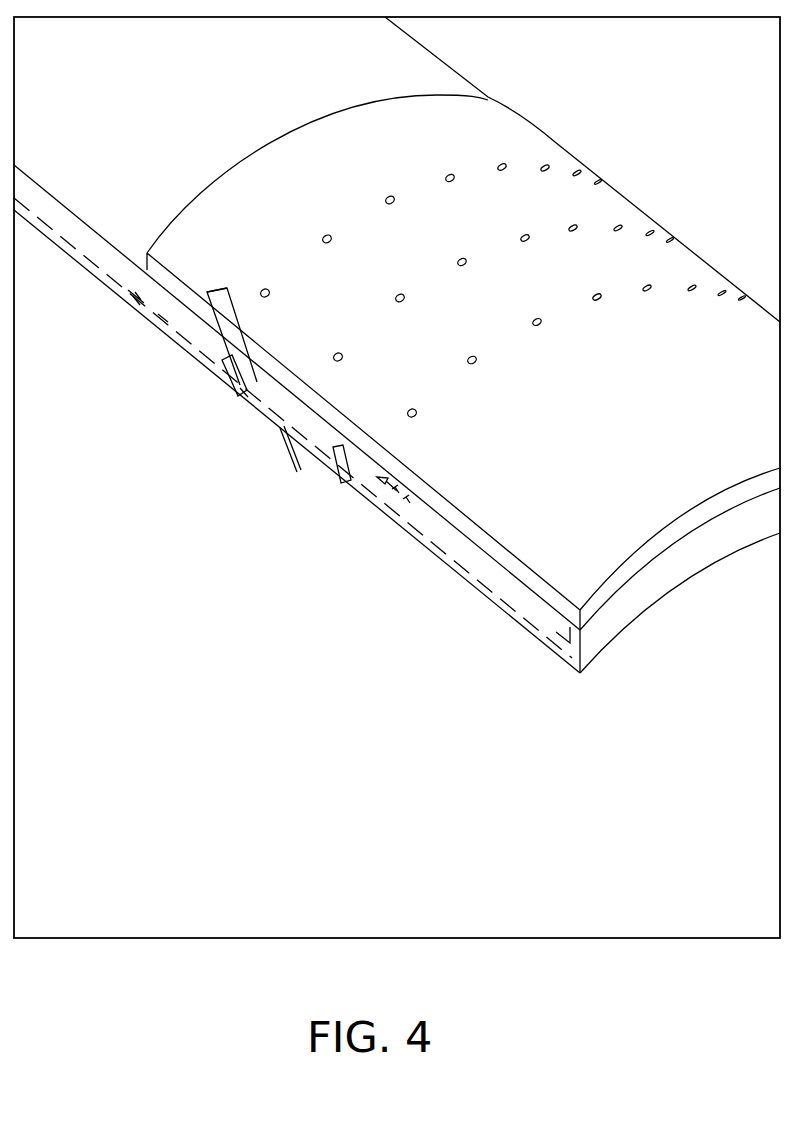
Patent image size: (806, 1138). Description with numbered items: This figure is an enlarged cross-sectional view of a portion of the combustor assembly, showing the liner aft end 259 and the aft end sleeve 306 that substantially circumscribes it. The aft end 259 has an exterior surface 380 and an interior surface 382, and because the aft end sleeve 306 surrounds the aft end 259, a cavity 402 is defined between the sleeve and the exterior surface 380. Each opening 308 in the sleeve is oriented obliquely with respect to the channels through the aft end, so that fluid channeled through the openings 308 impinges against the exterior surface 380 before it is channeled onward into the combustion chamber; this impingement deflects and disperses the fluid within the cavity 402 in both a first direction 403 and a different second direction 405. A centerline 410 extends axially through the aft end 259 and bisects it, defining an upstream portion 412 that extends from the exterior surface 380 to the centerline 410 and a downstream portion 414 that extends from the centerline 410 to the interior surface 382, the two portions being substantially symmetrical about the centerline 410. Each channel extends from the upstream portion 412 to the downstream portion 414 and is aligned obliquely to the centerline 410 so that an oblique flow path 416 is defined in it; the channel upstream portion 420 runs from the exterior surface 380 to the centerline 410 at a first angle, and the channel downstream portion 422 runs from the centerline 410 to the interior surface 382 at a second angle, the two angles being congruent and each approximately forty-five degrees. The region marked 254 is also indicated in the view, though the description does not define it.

The lighting assembly 254 is at (250, 95).
The aft end 259 is at (350, 672).
The aft end sleeve 306 is at (614, 403).
The opening 308 is at (326, 233).
The exterior surface 380 is at (468, 555).
The interior surface 382 is at (542, 647).
The cavity 402 is at (206, 290).
The first direction 403 is at (400, 465).
The second direction 405 is at (418, 513).
The centerline 410 is at (131, 308).
The upstream portion 412 is at (163, 318).
The downstream portion 414 is at (240, 395).
The oblique flow path 416 is at (324, 458).
The channel upstream portion 420 is at (262, 386).
The channel downstream portion 422 is at (320, 453).